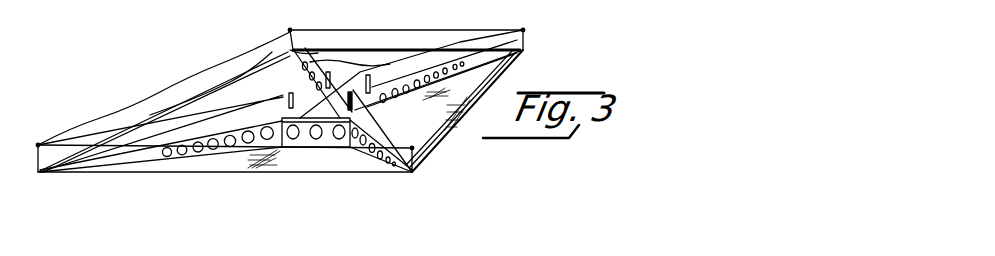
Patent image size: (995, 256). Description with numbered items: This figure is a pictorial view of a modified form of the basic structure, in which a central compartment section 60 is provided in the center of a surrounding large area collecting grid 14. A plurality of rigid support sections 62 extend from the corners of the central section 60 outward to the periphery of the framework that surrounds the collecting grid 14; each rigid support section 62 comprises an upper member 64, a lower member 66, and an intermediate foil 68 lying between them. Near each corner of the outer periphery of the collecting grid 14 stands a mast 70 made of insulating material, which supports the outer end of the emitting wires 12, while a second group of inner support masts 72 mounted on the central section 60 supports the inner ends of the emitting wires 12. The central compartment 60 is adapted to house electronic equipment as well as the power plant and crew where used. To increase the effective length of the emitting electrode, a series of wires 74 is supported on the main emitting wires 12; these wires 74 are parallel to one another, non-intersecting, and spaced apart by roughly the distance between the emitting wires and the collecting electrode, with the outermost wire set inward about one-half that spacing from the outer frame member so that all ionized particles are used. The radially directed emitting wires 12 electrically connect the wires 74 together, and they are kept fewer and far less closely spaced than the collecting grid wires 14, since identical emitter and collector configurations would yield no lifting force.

The emitting wires 12 is at (80, 130).
The collecting grid 14 is at (438, 28).
The central compartment section 60 is at (330, 130).
The rigid support sections 62 is at (150, 165).
The upper member 64 is at (145, 145).
The lower member 66 is at (190, 160).
The intermediate foil 68 is at (222, 152).
The mast 70 is at (38, 145).
The inner support masts 72 is at (320, 70).
The series of wires 74 is at (283, 96).